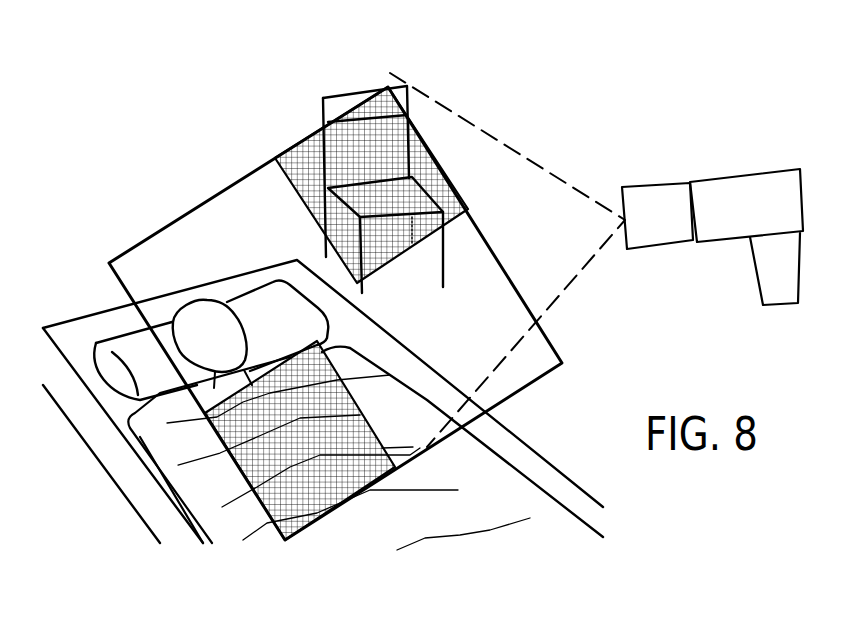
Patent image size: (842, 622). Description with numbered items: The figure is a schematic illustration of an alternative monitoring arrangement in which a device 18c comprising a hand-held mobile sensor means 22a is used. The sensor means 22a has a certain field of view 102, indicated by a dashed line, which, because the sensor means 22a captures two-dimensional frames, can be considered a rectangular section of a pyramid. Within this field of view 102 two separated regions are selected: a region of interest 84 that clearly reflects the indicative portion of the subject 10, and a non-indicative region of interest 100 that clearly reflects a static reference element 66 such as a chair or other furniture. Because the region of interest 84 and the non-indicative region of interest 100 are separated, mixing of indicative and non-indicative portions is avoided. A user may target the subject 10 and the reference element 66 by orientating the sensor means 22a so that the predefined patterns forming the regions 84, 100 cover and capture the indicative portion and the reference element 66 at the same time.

The subject 10 is at (193, 317).
The static reference element 66 is at (330, 98).
The non-indicative region of interest 100 is at (295, 152).
The field of view 102 is at (485, 122).
The device 18c is at (712, 172).
The hand-held mobile sensor means 22a is at (658, 230).
The region of interest 84 is at (265, 513).